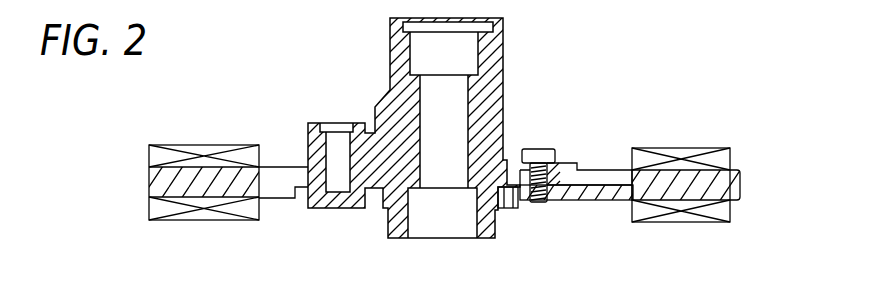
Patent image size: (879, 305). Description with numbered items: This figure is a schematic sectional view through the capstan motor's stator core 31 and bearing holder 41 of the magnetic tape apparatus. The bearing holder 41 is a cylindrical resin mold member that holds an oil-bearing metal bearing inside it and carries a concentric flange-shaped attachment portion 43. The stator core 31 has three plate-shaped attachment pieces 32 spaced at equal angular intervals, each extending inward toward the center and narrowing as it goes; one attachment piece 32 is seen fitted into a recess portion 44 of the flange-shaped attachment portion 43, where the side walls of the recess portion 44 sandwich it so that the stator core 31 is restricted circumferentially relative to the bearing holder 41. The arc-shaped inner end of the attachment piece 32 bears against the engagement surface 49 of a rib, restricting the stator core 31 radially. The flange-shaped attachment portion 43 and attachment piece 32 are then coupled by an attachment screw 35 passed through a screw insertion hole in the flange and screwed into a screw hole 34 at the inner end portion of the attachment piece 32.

The stator core 31 is at (742, 184).
The attachment piece 32 is at (606, 201).
The screw hole 34 is at (538, 204).
The attachment screw 35 is at (536, 149).
The bearing holder 41 is at (528, 53).
The flange-shaped attachment portion 43 is at (573, 168).
The recess portion 44 is at (553, 204).
The engagement surface 49 is at (509, 209).